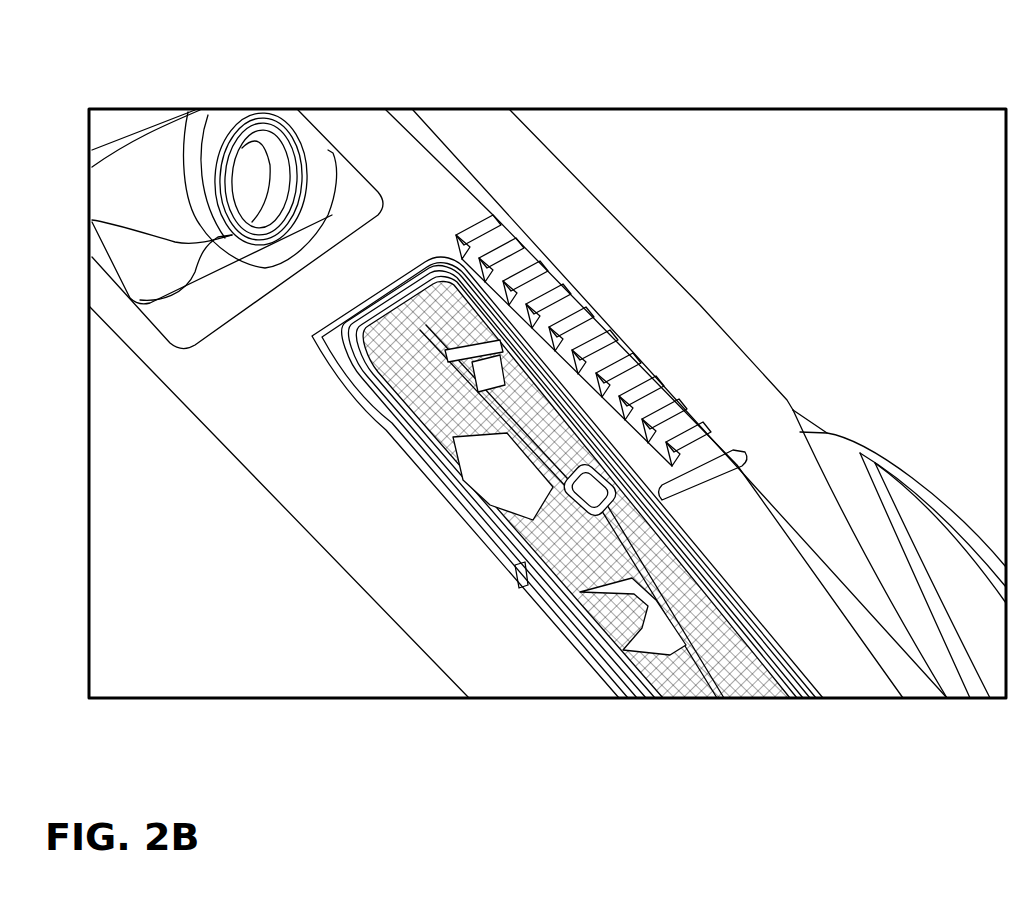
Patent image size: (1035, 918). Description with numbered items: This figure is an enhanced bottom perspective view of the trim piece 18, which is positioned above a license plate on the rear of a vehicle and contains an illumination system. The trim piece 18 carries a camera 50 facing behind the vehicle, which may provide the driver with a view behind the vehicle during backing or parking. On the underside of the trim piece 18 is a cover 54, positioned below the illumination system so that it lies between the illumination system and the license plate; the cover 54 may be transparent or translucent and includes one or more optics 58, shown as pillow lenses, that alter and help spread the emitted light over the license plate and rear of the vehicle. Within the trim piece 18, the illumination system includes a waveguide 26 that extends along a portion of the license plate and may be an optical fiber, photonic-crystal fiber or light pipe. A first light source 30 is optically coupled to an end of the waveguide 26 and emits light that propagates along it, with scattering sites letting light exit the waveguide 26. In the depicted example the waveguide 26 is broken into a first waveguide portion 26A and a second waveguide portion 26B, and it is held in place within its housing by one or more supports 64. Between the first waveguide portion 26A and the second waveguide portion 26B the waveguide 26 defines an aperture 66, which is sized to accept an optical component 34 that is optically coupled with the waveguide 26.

The trim piece 18 is at (283, 546).
The camera 50 is at (246, 163).
The waveguide 26 is at (657, 576).
The first waveguide portion 26A is at (530, 380).
The second waveguide portion 26B is at (692, 598).
The first light source 30 is at (523, 242).
The optical component 34 is at (587, 463).
The cover 54 is at (766, 618).
The optics 58 is at (745, 690).
The supports 64 is at (480, 368).
The aperture 66 is at (556, 512).